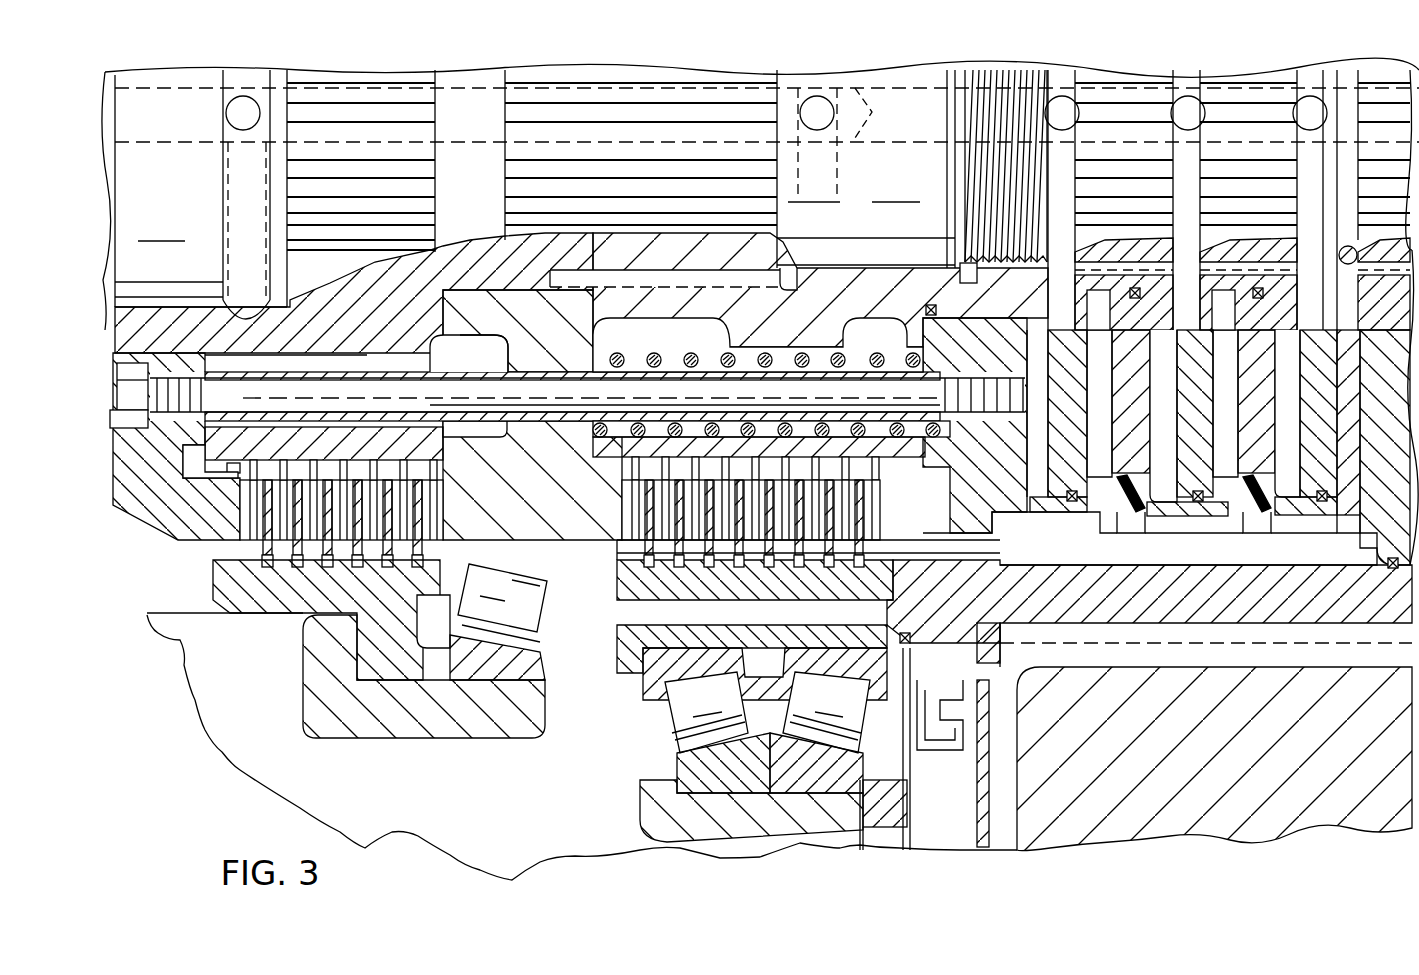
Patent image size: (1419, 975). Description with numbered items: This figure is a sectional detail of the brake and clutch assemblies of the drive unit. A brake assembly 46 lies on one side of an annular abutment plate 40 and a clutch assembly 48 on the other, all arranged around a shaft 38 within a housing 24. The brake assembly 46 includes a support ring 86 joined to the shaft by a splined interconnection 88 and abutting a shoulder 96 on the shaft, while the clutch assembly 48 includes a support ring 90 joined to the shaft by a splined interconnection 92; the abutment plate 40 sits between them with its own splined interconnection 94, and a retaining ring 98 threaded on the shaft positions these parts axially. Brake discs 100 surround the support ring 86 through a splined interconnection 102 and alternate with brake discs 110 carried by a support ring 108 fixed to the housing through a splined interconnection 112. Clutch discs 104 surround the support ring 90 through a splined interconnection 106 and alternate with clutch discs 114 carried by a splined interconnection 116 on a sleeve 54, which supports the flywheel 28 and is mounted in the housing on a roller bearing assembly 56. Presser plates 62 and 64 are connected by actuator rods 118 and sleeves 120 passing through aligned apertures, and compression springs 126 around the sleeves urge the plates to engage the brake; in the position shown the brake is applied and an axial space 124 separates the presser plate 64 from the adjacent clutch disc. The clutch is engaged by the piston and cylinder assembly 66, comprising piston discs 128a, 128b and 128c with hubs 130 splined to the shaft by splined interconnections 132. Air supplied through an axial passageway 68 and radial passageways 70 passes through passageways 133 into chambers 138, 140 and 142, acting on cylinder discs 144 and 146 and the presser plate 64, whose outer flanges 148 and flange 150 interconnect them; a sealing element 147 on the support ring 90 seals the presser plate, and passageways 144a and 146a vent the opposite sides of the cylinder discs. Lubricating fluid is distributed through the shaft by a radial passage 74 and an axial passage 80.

The housing 24 is at (290, 735).
The flywheel 28 is at (1215, 840).
The shaft 38 is at (873, 174).
The abutment plate 40 is at (518, 499).
The brake assembly 46 is at (222, 551).
The clutch assembly 48 is at (612, 567).
The sleeve 54 is at (1304, 604).
The roller bearing assembly 56 is at (655, 735).
The presser plate 62 is at (162, 520).
The presser plate 64 is at (961, 482).
The piston and cylinder assembly 66 is at (1345, 437).
The axial passageway 68 is at (1348, 100).
The radial passageways 70 is at (1065, 100).
The radial passage 74 is at (258, 200).
The axial passage 80 is at (170, 122).
The support ring 86 is at (220, 450).
The splined interconnection 88 is at (418, 300).
The support ring 90 is at (825, 300).
The splined interconnection 92 is at (775, 265).
The splined interconnection 94 is at (598, 282).
The shoulder 96 is at (135, 300).
The retaining ring 98 is at (930, 305).
The brake discs 100 is at (425, 490).
The splined interconnection 102 is at (128, 420).
The clutch discs 104 is at (665, 492).
The splined interconnection 106 is at (632, 466).
The support ring 108 is at (230, 600).
The brake discs 110 is at (385, 520).
The splined interconnection 112 is at (422, 560).
The clutch discs 114 is at (680, 515).
The splined interconnection 116 is at (652, 562).
The actuator rods 118 is at (412, 378).
The sleeves 120 is at (496, 372).
The axial space 124 is at (880, 542).
The compression springs 126 is at (685, 352).
The piston disc 128a is at (1068, 505).
The piston disc 128b is at (1208, 512).
The piston disc 128c is at (1330, 490).
The hub 130 is at (1140, 280).
The splined interconnections 132 is at (1090, 255).
The passageways 133 is at (1105, 275).
The chamber 138 is at (1163, 500).
The chamber 140 is at (1295, 467).
The chamber 142 is at (1030, 450).
The cylinder disc 144 is at (1130, 500).
The passageway 144a is at (1130, 530).
The cylinder disc 146 is at (1270, 505).
The passageway 146a is at (1262, 525).
The sealing element 147 is at (923, 320).
The outer flange 148 is at (1345, 522).
The flange 150 is at (1025, 522).